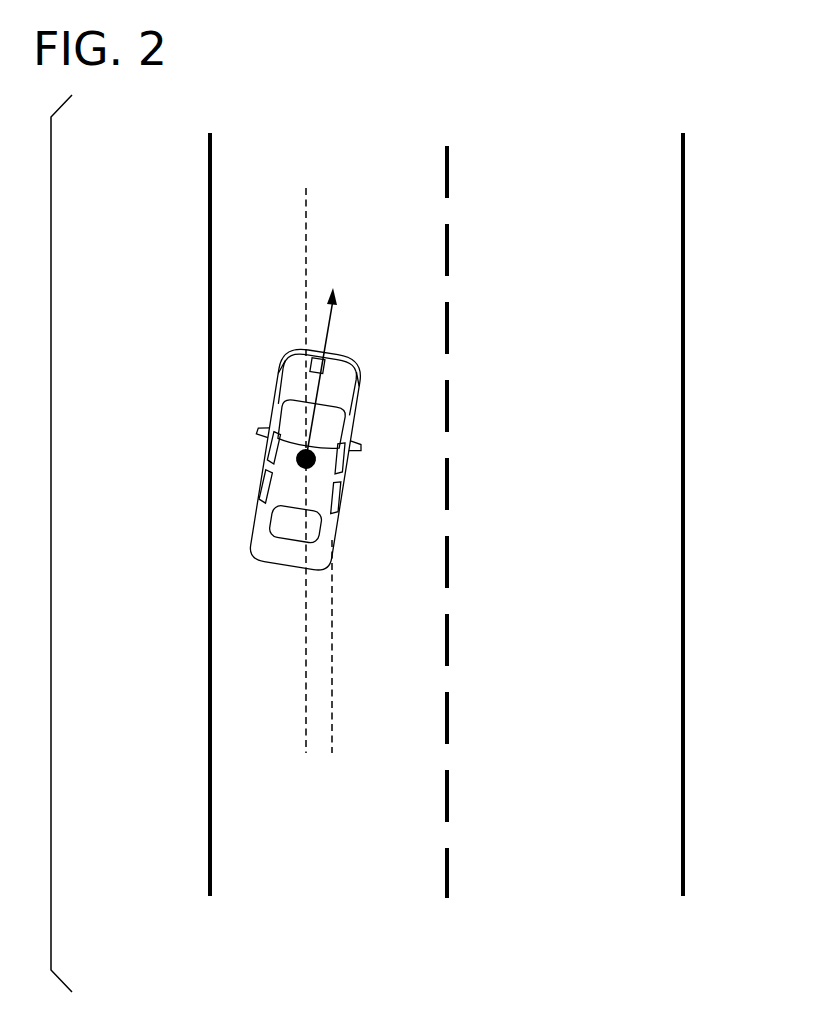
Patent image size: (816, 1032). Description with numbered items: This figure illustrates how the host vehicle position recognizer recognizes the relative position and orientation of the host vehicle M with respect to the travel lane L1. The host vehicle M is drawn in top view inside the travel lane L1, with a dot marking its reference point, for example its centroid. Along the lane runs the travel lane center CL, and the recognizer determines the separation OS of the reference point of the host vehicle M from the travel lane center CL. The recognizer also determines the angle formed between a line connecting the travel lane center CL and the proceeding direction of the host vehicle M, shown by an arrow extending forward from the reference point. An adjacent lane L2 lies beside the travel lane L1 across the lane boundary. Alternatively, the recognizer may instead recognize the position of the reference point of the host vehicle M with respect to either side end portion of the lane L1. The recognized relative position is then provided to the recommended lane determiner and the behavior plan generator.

The host vehicle M is at (262, 473).
The travel lane center CL is at (332, 637).
The separation OS is at (357, 740).
The travel lane L1 is at (325, 874).
The adjacent lane L2 is at (562, 874).